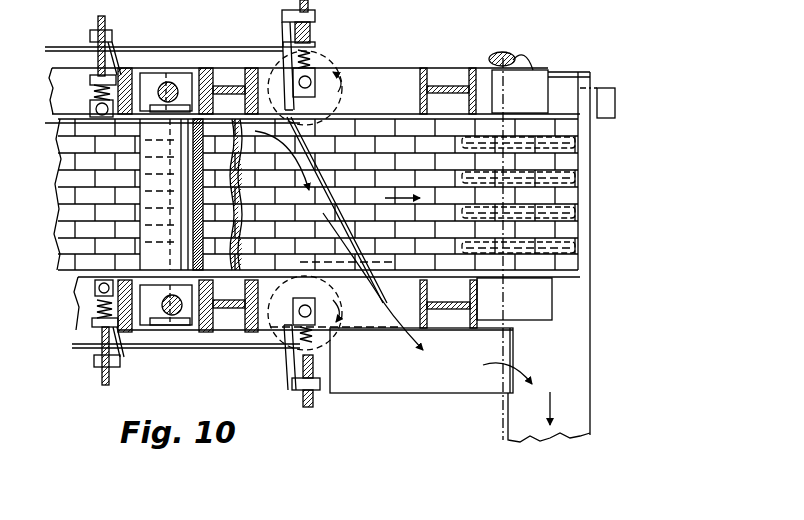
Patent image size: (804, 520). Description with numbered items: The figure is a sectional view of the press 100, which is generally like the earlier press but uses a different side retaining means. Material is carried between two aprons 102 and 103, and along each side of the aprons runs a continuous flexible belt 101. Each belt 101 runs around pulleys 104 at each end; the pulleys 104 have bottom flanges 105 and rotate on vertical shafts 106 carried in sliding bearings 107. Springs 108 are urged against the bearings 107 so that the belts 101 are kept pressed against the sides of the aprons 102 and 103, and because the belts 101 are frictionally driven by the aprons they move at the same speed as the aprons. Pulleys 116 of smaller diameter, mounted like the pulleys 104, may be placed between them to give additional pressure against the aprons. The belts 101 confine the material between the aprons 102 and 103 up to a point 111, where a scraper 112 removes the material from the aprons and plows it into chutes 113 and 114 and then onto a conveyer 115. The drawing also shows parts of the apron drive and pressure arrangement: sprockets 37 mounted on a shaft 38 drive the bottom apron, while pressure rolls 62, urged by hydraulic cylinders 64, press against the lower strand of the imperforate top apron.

The sprockets 37 is at (577, 158).
The shaft 38 is at (537, 64).
The pressure rolls 62 is at (164, 56).
The hydraulic cylinders 64 is at (160, 83).
The press 100 is at (444, 65).
The continuous flexible belts 101 is at (238, 46).
The apron 102 is at (578, 198).
The apron 103 is at (223, 200).
The pulleys 104 is at (333, 103).
The bottom flanges 105 is at (330, 35).
The vertical shafts 106 is at (304, 88).
The sliding bearings 107 is at (316, 78).
The springs 108 is at (312, 62).
The point 111 is at (287, 225).
The scraper 112 is at (324, 184).
The chute 113 is at (340, 328).
The chute 114 is at (336, 310).
The conveyer 115 is at (332, 272).
The pulleys of smaller diameter 116 is at (100, 118).